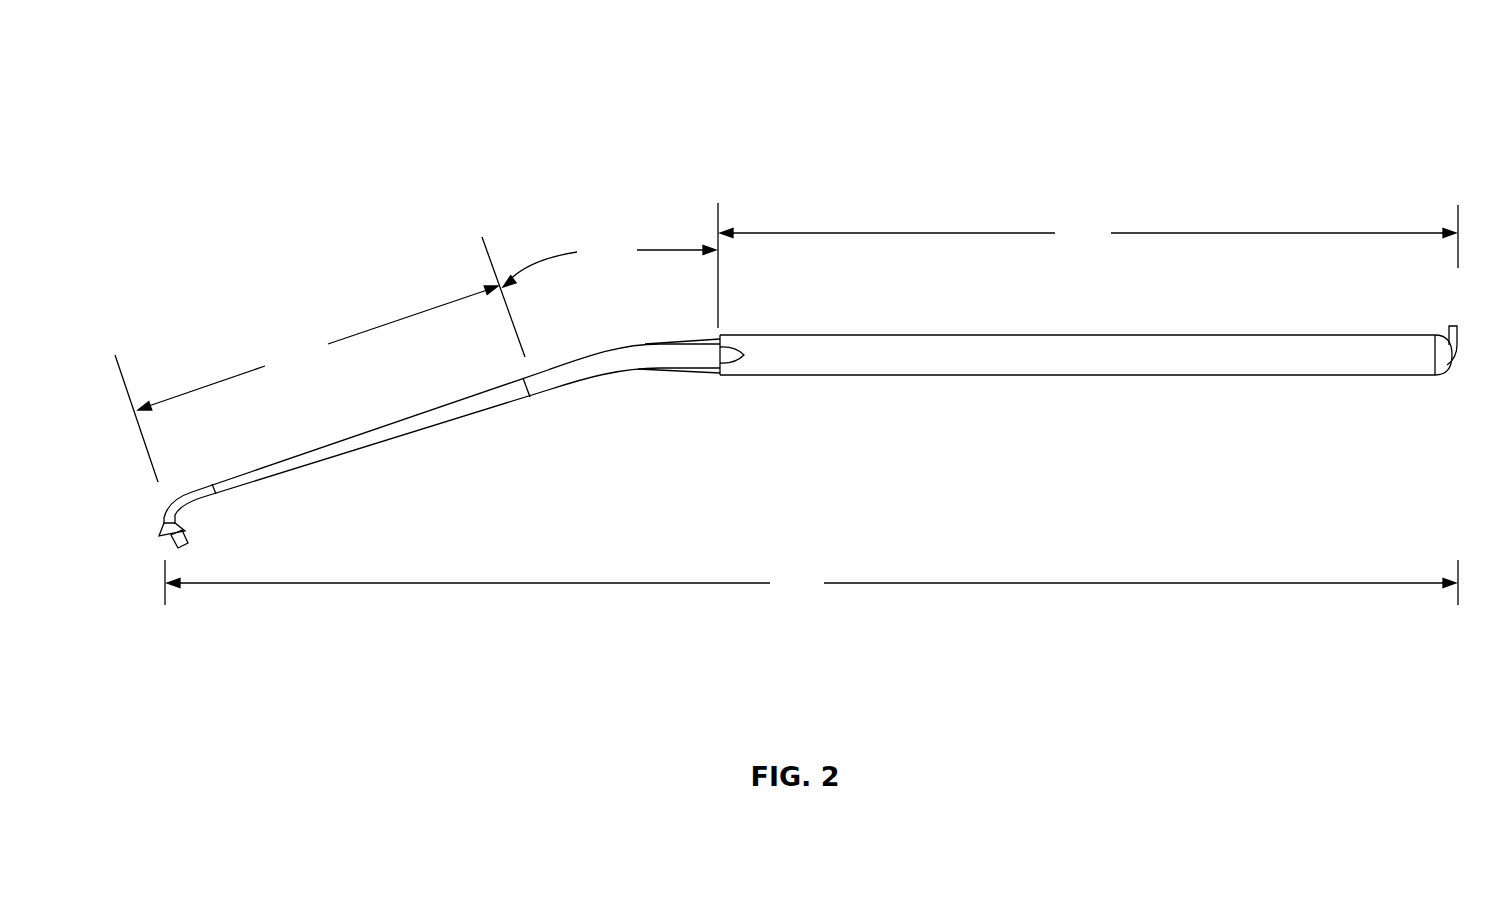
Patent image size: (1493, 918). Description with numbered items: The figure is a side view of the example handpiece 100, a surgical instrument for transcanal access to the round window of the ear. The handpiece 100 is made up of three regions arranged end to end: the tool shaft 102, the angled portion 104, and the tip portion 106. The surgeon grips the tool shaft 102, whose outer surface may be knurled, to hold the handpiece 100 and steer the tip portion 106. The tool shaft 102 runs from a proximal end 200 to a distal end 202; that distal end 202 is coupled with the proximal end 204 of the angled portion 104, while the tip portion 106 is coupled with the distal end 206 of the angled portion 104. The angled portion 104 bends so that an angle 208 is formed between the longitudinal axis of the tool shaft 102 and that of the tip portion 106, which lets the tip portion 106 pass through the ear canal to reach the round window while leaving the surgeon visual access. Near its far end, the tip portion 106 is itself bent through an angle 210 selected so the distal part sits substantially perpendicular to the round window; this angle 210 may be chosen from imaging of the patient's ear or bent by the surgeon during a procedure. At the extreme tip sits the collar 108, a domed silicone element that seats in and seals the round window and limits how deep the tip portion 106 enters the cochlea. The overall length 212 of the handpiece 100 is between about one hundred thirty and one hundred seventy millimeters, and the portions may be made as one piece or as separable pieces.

The handpiece 100 is at (297, 69).
The tool shaft 102 is at (1088, 265).
The angled portion 104 is at (599, 296).
The tip portion 106 is at (306, 384).
The collar 108 is at (165, 528).
The proximal end 200 is at (1413, 358).
The distal end 202 is at (751, 360).
The proximal end 204 is at (692, 357).
The distal end 206 is at (557, 378).
The angle 208 is at (718, 392).
The angle 210 is at (190, 536).
The overall length 212 is at (811, 582).